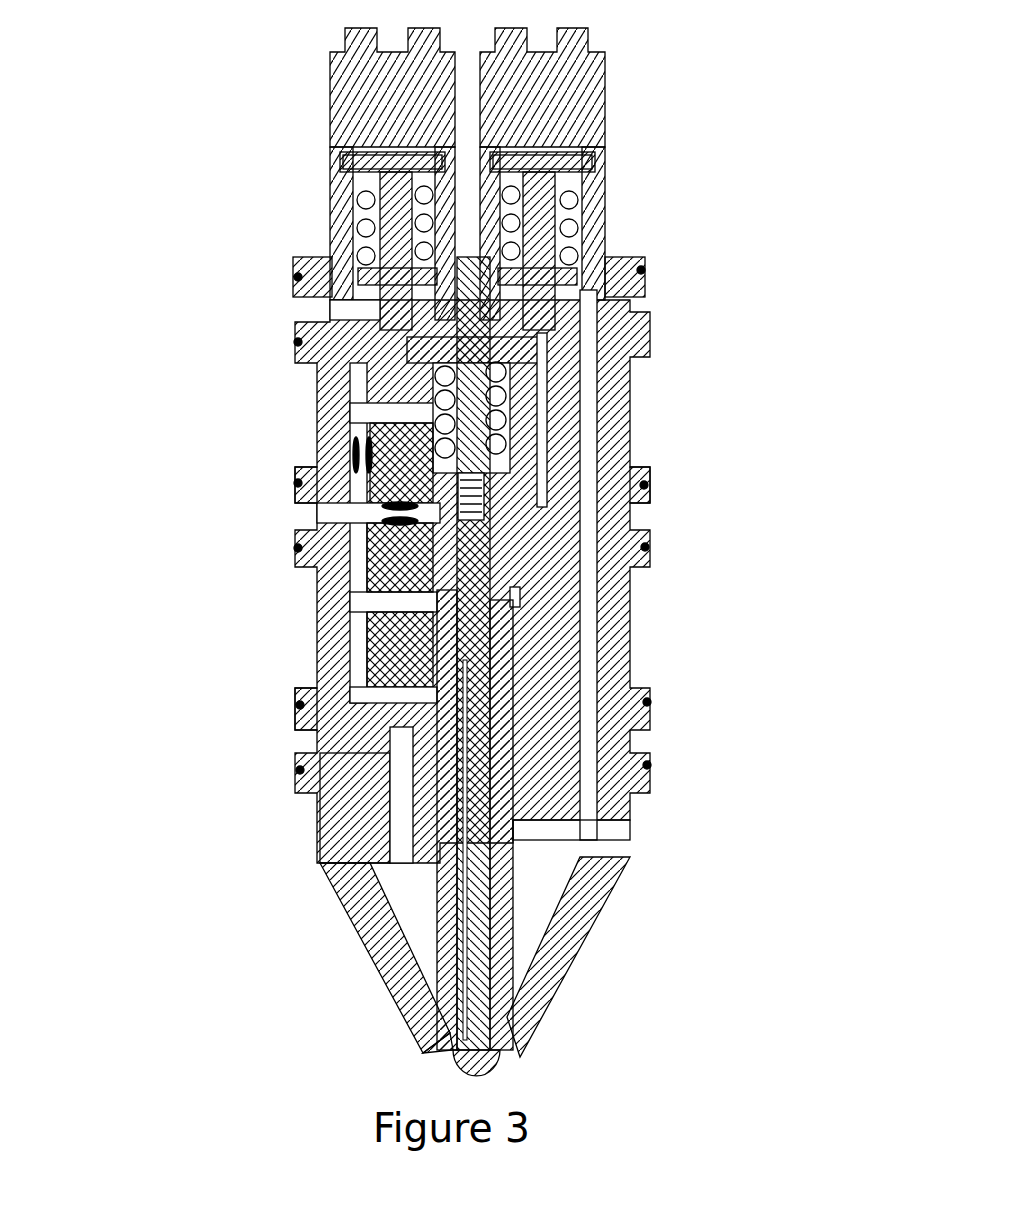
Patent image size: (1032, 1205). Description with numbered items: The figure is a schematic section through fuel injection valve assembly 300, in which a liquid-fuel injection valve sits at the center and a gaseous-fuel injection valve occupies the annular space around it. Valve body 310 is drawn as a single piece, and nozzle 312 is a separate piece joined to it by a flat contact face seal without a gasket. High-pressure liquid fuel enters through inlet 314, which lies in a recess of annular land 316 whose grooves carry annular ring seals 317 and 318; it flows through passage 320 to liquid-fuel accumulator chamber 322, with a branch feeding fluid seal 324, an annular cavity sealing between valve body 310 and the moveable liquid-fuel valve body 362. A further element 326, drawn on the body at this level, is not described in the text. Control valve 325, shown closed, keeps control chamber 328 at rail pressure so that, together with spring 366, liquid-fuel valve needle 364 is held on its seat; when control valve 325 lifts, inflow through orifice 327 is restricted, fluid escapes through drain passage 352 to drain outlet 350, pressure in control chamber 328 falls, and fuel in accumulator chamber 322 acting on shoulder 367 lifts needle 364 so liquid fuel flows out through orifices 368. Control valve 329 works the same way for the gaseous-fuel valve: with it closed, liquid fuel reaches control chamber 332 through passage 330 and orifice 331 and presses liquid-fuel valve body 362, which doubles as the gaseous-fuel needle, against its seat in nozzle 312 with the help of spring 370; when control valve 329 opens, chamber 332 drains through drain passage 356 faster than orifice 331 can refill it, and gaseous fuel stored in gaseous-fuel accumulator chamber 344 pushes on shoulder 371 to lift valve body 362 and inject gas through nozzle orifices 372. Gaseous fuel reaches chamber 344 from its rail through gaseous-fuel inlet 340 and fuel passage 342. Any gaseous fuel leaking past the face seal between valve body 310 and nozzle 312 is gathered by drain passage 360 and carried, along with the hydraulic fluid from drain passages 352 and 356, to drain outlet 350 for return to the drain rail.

The fuel injection valve assembly 300 is at (265, 48).
The control valve 329 is at (262, 127).
The control valve 325 is at (668, 113).
The drain outlet 350 is at (298, 277).
The drain passage 356 is at (385, 372).
The orifice 331 is at (355, 455).
The passage 330 is at (370, 470).
The seal ring 326 is at (298, 483).
The annular ring seal 317 is at (340, 515).
The inlet 314 is at (318, 512).
The annular land 316 is at (380, 520).
The annular ring seal 318 is at (298, 548).
The orifice 327 is at (385, 538).
The passage 320 is at (390, 601).
The drain passage 360 is at (333, 652).
The fluid seal 324 is at (433, 690).
The gaseous-fuel inlet 340 is at (336, 738).
The fuel passage 342 is at (400, 803).
The shoulder 371 is at (440, 862).
The nozzle 312 is at (375, 925).
The nozzle orifices 372 is at (445, 1010).
The control chamber 332 is at (540, 330).
The spring 370 is at (592, 355).
The drain passage 352 is at (548, 413).
The control chamber 328 is at (515, 430).
The spring 366 is at (490, 488).
The shoulder 367 is at (506, 598).
The valve body 310 is at (552, 690).
The liquid-fuel valve body 362 is at (620, 770).
The liquid-fuel valve needle 364 is at (590, 835).
The liquid-fuel accumulator chamber 322 is at (525, 888).
The gaseous-fuel accumulator chamber 344 is at (530, 912).
The orifices 368 is at (490, 1022).